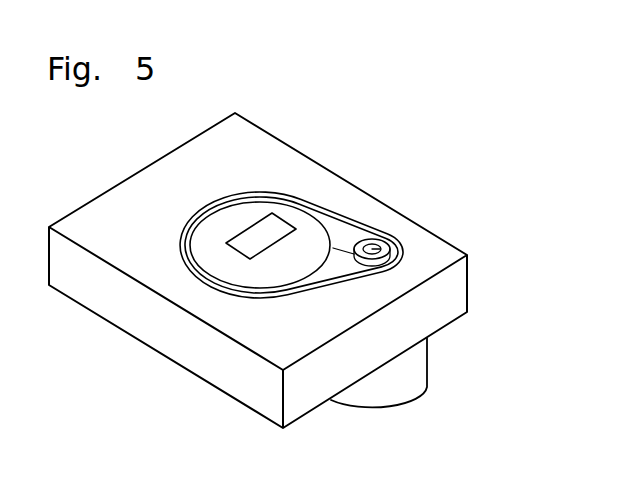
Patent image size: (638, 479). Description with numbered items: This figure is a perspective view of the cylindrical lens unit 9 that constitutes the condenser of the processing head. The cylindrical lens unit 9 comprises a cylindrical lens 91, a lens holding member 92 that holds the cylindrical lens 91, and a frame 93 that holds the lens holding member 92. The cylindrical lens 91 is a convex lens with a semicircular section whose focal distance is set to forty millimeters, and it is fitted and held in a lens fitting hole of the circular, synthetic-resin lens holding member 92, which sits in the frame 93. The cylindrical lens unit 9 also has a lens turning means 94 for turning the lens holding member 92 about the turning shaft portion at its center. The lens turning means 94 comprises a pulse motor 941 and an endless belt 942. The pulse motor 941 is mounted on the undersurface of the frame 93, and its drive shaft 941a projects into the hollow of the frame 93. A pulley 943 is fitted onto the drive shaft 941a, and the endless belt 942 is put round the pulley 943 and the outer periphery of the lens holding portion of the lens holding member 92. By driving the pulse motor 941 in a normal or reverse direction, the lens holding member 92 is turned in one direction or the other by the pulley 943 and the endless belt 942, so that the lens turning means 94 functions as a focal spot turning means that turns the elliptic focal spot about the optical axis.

The cylindrical lens unit 9 is at (416, 173).
The cylindrical lens 91 is at (255, 231).
The lens holding member 92 is at (213, 234).
The frame 93 is at (305, 154).
The lens turning means 94 is at (428, 358).
The pulse motor 941 is at (417, 380).
The drive shaft 941a is at (374, 243).
The endless belt 942 is at (340, 220).
The pulley 943 is at (401, 248).